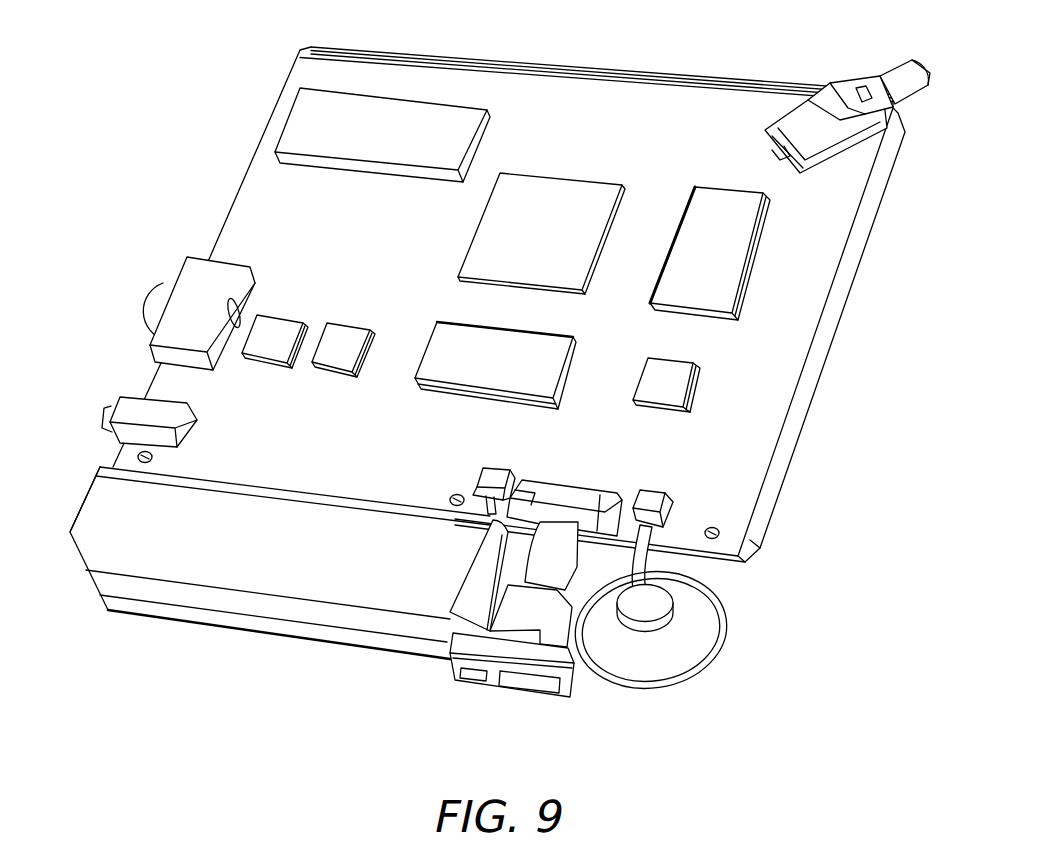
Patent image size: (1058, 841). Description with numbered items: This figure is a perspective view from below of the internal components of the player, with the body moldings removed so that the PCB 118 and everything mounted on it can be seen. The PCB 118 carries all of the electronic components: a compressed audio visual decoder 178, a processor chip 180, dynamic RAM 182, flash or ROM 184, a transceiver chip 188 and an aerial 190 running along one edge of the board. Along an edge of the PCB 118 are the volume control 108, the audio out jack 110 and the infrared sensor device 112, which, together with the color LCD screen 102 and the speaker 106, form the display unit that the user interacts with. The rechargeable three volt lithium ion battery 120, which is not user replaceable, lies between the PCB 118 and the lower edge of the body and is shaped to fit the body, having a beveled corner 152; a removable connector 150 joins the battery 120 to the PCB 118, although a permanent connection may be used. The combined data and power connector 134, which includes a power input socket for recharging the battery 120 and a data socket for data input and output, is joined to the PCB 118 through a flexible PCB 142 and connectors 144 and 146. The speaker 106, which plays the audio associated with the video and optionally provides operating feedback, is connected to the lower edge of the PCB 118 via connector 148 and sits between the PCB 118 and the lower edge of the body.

The color LCD screen 102 is at (818, 360).
The speaker 106 is at (693, 643).
The volume control 108 is at (180, 303).
The audio out jack 110 is at (142, 412).
The infrared sensor device 112 is at (840, 90).
The PCB 118 is at (248, 200).
The rechargeable 3 volt lithium ion battery 120 is at (303, 588).
The combined data and power connector 134 is at (518, 683).
The flexible PCB 142 is at (555, 570).
The connector 144 is at (600, 510).
The connector 146 is at (540, 488).
The connector 148 is at (657, 502).
The removable connector 150 is at (488, 480).
The beveled corner 152 is at (75, 553).
The compressed audio visual decoder 178 is at (673, 385).
The processor chip 180 is at (540, 188).
The dynamic RAM (DRAM) 182 is at (730, 247).
The flash or ROM 184 is at (267, 327).
The transceiver chip 188 is at (345, 337).
The aerial 190 is at (443, 56).